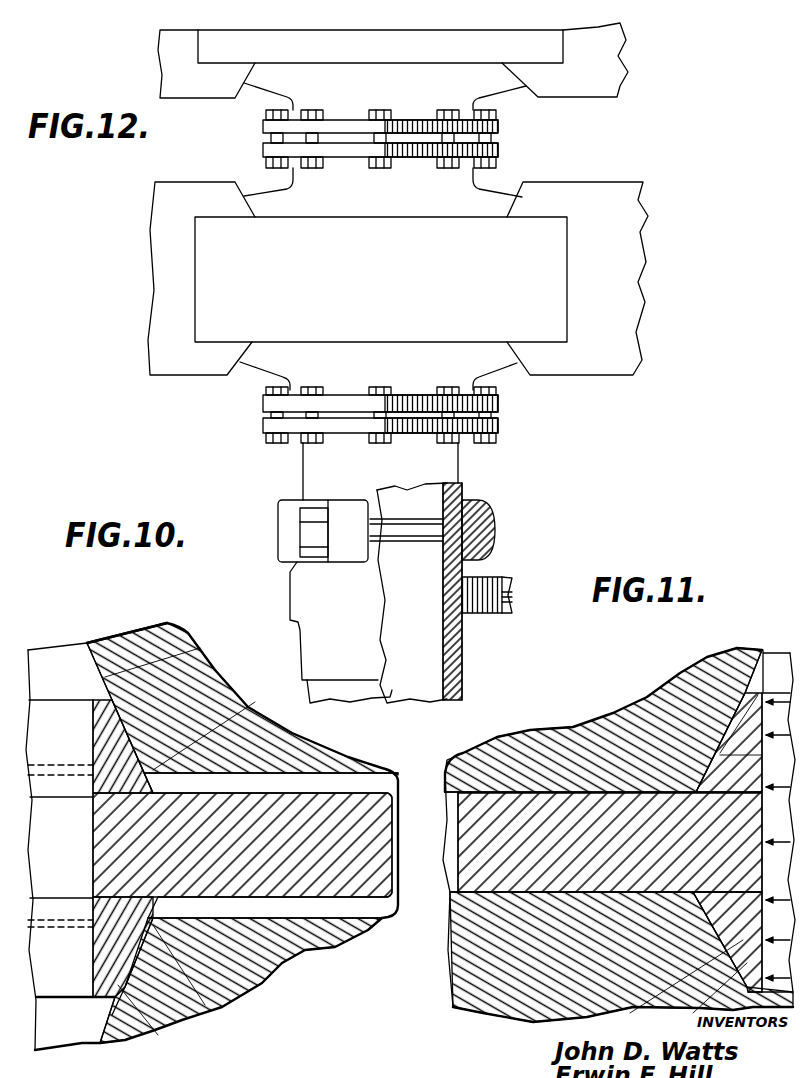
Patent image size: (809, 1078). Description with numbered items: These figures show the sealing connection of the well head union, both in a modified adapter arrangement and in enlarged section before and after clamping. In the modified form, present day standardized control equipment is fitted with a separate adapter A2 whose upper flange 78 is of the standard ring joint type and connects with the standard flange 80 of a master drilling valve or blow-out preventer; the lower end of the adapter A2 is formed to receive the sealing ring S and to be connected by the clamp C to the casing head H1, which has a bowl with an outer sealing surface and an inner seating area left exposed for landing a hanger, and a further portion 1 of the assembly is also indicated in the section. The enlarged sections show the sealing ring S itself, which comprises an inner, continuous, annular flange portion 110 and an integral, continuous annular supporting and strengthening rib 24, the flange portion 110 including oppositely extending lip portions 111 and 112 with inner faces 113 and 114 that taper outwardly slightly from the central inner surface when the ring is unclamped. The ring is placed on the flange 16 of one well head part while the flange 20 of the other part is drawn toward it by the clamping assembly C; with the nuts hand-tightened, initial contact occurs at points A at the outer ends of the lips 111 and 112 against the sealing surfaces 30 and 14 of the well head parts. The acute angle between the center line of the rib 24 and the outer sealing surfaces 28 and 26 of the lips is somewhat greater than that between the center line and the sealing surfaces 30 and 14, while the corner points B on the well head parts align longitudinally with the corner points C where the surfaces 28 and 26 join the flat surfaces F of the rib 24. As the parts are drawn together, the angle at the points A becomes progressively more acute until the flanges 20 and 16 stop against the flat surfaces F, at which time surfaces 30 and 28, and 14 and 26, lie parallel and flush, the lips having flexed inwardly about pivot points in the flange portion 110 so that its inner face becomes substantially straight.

In FIG. 12, the standard flange 80 is at (498, 403).
In FIG. 12, the upper flange 78 is at (498, 427).
In FIG. 12, the separate adapter A2 is at (303, 471).
In FIG. 12, the casing head H1 is at (296, 597).
In FIG. 12, the sealing ring S is at (401, 530).
In FIG. 10, the sealing ring S is at (246, 876).
In FIG. 11, the sealing ring S is at (579, 803).
In FIG. 12, the clamp C is at (497, 520).
In FIG. 10, the clamp C is at (157, 790).
In FIG. 12, the wheel web flange 1 is at (449, 690).
In FIG. 10, the sealing surface 30 is at (143, 640).
In FIG. 11, the sealing surface 30 is at (720, 688).
In FIG. 10, the initial contact points A is at (212, 645).
In FIG. 10, the flange 20 is at (245, 686).
In FIG. 11, the flange 20 is at (503, 741).
In FIG. 10, the corner points B is at (262, 700).
In FIG. 10, the inner face 113 is at (96, 712).
In FIG. 10, the outer sealing surface 28 is at (125, 742).
In FIG. 11, the outer sealing surface 28 is at (771, 821).
In FIG. 10, the lip portion 111 is at (99, 753).
In FIG. 11, the lip portion 111 is at (740, 733).
In FIG. 10, the flat surfaces F is at (264, 792).
In FIG. 10, the supporting and strengthening rib 24 is at (383, 793).
In FIG. 11, the supporting and strengthening rib 24 is at (467, 860).
In FIG. 10, the flange portion 110 is at (103, 832).
In FIG. 11, the flange portion 110 is at (750, 828).
In FIG. 10, the lip portion 112 is at (99, 939).
In FIG. 11, the lip portion 112 is at (693, 1013).
In FIG. 10, the outer sealing surface 26 is at (128, 953).
In FIG. 11, the outer sealing surface 26 is at (730, 950).
In FIG. 10, the inner face 114 is at (98, 1000).
In FIG. 10, the sealing surface 14 is at (108, 1013).
In FIG. 11, the sealing surface 14 is at (630, 1013).
In FIG. 10, the flange 16 is at (263, 975).
In FIG. 11, the flange 16 is at (480, 1013).